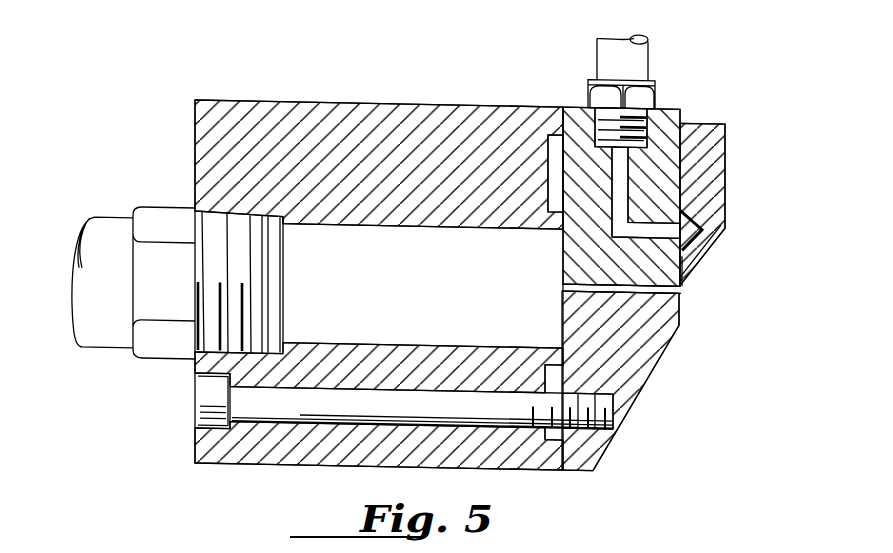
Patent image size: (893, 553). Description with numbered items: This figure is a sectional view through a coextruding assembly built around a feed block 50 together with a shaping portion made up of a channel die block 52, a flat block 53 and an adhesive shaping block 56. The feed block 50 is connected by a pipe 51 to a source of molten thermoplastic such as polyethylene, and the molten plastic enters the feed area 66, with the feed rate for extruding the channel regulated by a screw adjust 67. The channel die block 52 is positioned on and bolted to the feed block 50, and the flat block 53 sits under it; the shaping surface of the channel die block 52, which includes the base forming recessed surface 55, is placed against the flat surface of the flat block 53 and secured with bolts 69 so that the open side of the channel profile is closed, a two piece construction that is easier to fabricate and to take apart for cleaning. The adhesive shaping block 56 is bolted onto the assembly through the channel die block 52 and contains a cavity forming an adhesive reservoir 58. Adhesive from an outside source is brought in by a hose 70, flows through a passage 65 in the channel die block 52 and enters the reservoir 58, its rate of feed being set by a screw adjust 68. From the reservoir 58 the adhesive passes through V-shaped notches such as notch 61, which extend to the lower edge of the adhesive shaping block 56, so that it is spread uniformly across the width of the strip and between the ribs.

The feed block 50 is at (352, 122).
The pipe 51 is at (113, 229).
The channel die block 52 is at (575, 121).
The flat block 53 is at (647, 333).
The base forming recessed surface 55 is at (680, 281).
The adhesive shaping block 56 is at (705, 123).
The adhesive reservoir 58 is at (723, 217).
The V-shaped notch 61 is at (690, 260).
The passage 65 is at (620, 182).
The feed area 66 is at (313, 320).
The screw adjust 67 is at (240, 319).
The screw adjust 68 is at (648, 104).
The bolts 69 is at (603, 395).
The hose 70 is at (608, 47).